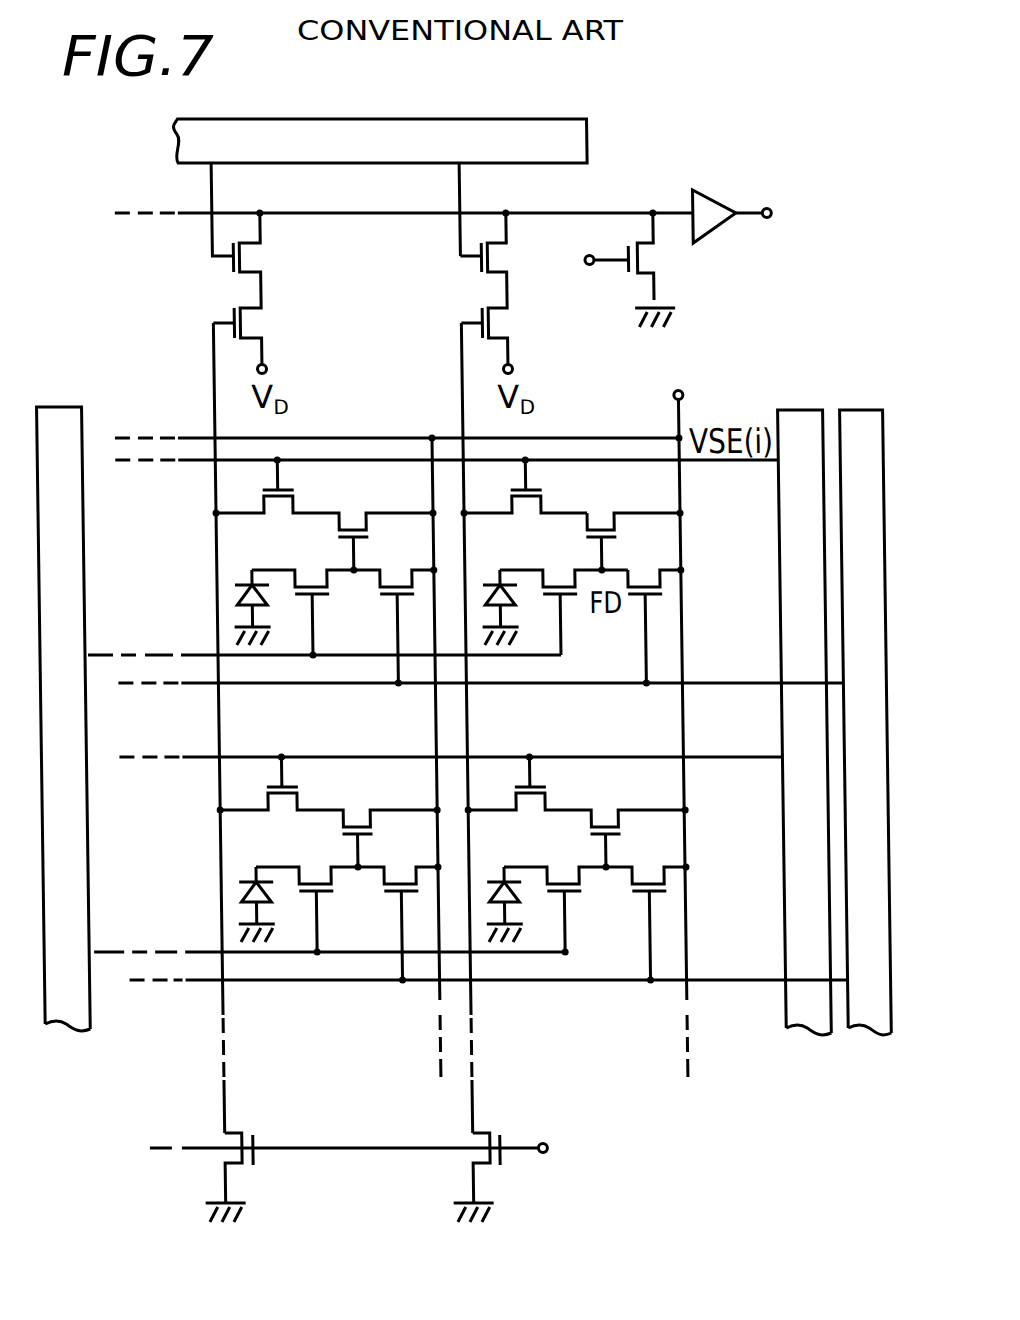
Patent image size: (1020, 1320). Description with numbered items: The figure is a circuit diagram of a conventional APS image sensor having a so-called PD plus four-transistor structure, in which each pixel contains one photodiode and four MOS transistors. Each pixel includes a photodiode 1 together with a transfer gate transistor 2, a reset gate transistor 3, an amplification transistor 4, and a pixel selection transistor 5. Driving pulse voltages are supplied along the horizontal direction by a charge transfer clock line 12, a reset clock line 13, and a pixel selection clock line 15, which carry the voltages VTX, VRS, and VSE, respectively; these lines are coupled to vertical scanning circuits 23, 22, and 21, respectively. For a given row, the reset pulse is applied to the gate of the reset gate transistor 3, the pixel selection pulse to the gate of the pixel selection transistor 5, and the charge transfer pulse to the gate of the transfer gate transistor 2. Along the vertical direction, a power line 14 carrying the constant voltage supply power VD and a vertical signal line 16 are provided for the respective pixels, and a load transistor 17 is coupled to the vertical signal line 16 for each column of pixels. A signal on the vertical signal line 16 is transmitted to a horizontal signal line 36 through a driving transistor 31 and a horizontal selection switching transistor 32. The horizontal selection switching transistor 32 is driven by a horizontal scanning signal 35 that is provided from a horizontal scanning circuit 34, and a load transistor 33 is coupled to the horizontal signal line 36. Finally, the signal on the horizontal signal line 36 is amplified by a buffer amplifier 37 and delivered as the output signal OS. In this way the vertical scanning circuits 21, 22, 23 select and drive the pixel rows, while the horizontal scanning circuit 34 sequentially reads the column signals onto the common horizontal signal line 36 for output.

The photodiode 1 is at (493, 582).
The transfer gate transistor 2 is at (556, 578).
The reset gate transistor 3 is at (662, 594).
The amplification transistor 4 is at (616, 538).
The pixel selection transistor 5 is at (510, 488).
The charge transfer clock line 12 is at (558, 657).
The reset clock line 13 is at (600, 687).
The power line 14 is at (680, 548).
The pixel selection clock line 15 is at (615, 461).
The vertical signal line 16 is at (463, 387).
The load transistor 17 is at (486, 1127).
The vertical scanning circuit 21 is at (795, 408).
The vertical scanning circuit 22 is at (858, 408).
The vertical scanning circuit 23 is at (53, 405).
The driving transistor 31 is at (510, 322).
The horizontal selection switching transistor 32 is at (510, 258).
The load transistor 33 is at (631, 285).
The horizontal scanning circuit 34 is at (591, 143).
The horizontal scanning signal 35 is at (463, 191).
The horizontal signal line 36 is at (623, 213).
The buffer amplifier 37 is at (718, 190).